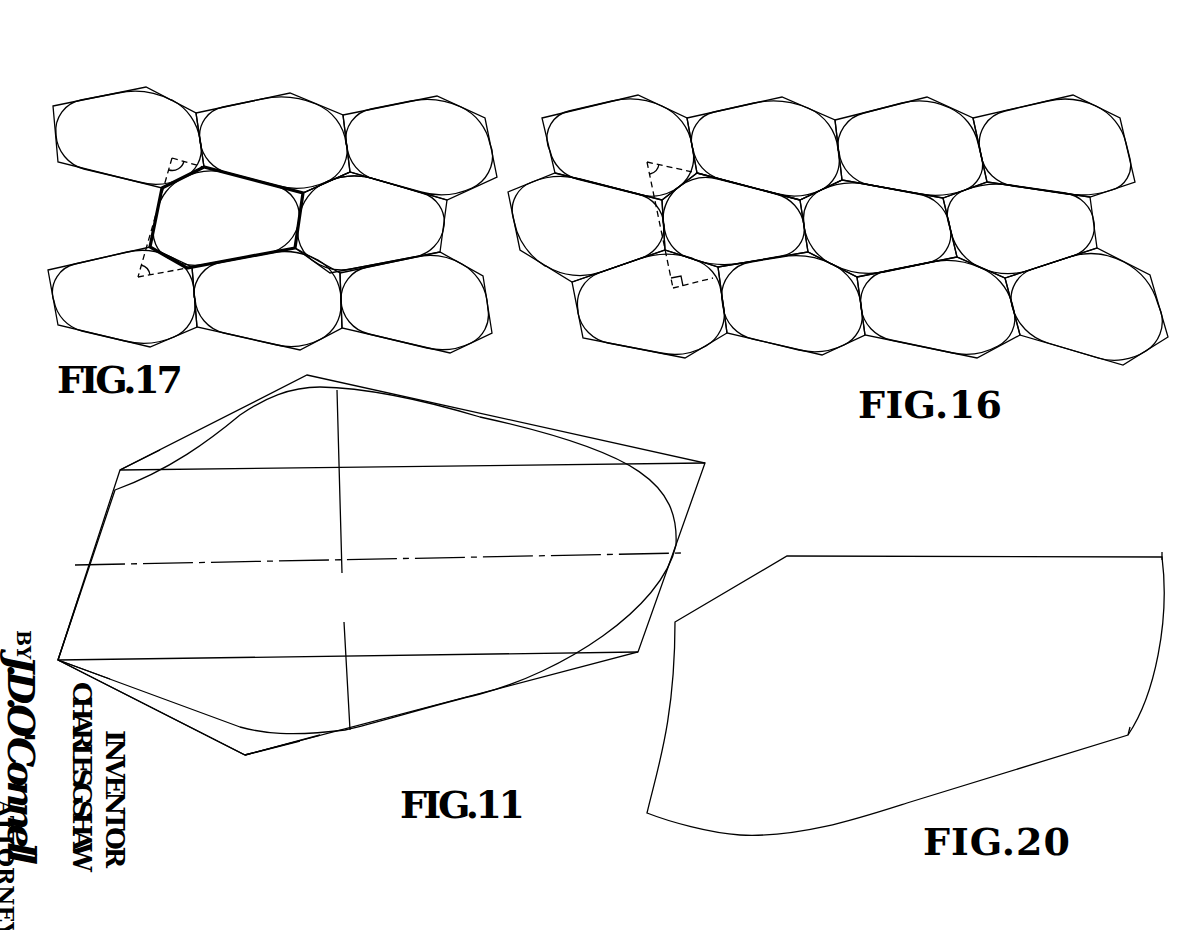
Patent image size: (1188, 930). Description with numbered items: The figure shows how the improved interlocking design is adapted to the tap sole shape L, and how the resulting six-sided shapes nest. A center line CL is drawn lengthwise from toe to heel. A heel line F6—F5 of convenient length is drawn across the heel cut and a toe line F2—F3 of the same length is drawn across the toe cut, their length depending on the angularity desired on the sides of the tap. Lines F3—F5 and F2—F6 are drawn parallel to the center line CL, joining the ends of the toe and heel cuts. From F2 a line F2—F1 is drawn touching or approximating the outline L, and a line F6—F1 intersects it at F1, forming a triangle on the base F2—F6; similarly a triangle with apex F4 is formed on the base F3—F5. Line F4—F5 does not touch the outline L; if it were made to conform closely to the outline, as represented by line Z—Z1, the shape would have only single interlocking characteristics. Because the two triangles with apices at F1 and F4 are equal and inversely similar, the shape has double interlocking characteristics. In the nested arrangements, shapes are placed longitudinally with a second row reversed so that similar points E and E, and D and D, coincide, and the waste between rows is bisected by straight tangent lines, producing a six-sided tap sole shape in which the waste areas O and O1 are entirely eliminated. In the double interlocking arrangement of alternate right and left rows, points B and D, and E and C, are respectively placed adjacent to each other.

In FIG. 17, the point of contact B is at (234, 275).
In FIG. 17, the point of contact D is at (247, 190).
In FIG. 16, the point of contact D is at (747, 198).
In FIG. 17, the waste area O is at (183, 158).
In FIG. 16, the waste area O is at (683, 288).
In FIG. 17, the waste area O1 is at (150, 278).
In FIG. 16, the waste area O1 is at (663, 165).
In FIG. 17, the point of contact E is at (328, 172).
In FIG. 16, the point of contact E is at (827, 202).
In FIG. 11, the point of contact E is at (156, 712).
In FIG. 17, the point of contact C is at (328, 180).
In FIG. 11, the apex of toe triangle F1 is at (307, 375).
In FIG. 11, the end of toe line F2 is at (705, 464).
In FIG. 11, the end of toe line F3 is at (638, 653).
In FIG. 11, the apex of heel triangle F4 is at (246, 756).
In FIG. 11, the end of heel line F5 is at (60, 661).
In FIG. 11, the end of heel line F6 is at (120, 470).
In FIG. 11, the end of conforming line Z is at (75, 661).
In FIG. 11, the end of conforming line Z1 is at (287, 745).
In FIG. 11, the tap sole shape L is at (343, 560).
In FIG. 11, the center line CL is at (378, 554).